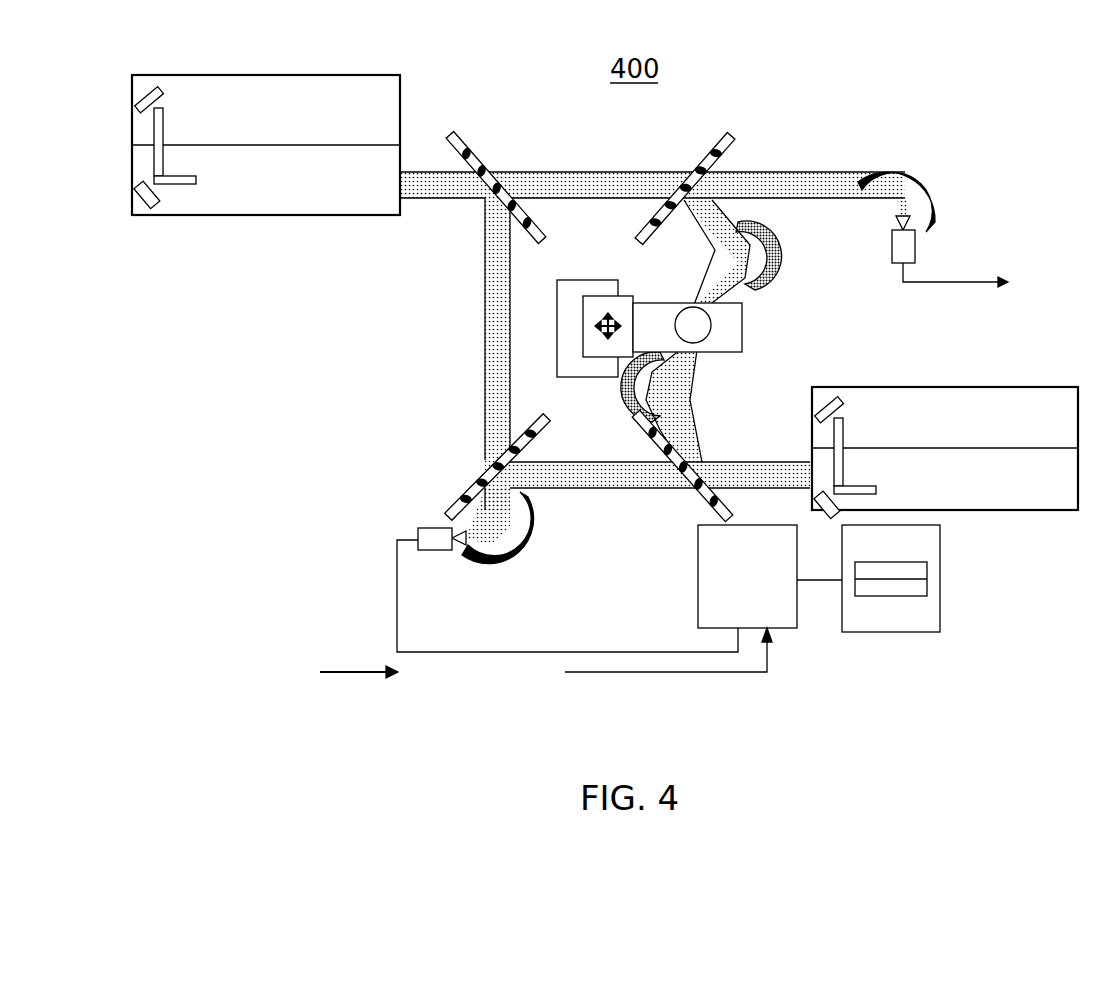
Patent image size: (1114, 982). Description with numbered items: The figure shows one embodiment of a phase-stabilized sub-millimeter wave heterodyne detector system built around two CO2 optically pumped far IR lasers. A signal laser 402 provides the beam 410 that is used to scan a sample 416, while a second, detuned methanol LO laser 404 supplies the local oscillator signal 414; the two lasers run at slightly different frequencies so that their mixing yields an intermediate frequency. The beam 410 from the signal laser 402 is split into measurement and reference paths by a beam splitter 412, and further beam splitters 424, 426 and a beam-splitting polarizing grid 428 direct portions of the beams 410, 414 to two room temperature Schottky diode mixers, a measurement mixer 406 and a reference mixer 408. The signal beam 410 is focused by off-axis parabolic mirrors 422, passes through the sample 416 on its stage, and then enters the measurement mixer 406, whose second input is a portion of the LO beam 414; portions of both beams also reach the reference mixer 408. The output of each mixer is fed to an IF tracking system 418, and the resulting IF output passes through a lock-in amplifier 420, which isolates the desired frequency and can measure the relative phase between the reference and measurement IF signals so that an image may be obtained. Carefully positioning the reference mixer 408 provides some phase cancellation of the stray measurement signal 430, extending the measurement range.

The signal laser 402 is at (1067, 510).
The LO laser 404 is at (205, 75).
The measurement mixer 406 is at (918, 250).
The reference mixer 408 is at (430, 550).
The beam 410 is at (673, 432).
The beam splitter 412 is at (700, 510).
The LO signal 414 is at (435, 173).
The sample 416 is at (675, 318).
The IF tracking system 418 is at (797, 630).
The lock-in amplifier 420 is at (900, 632).
The off-axis parabolic mirrors 422 is at (685, 383).
The beam splitter 424 is at (699, 170).
The beam splitter 426 is at (488, 463).
The beam-splitting polarizing grid 428 is at (515, 212).
The stray measurement signal 430 is at (745, 220).